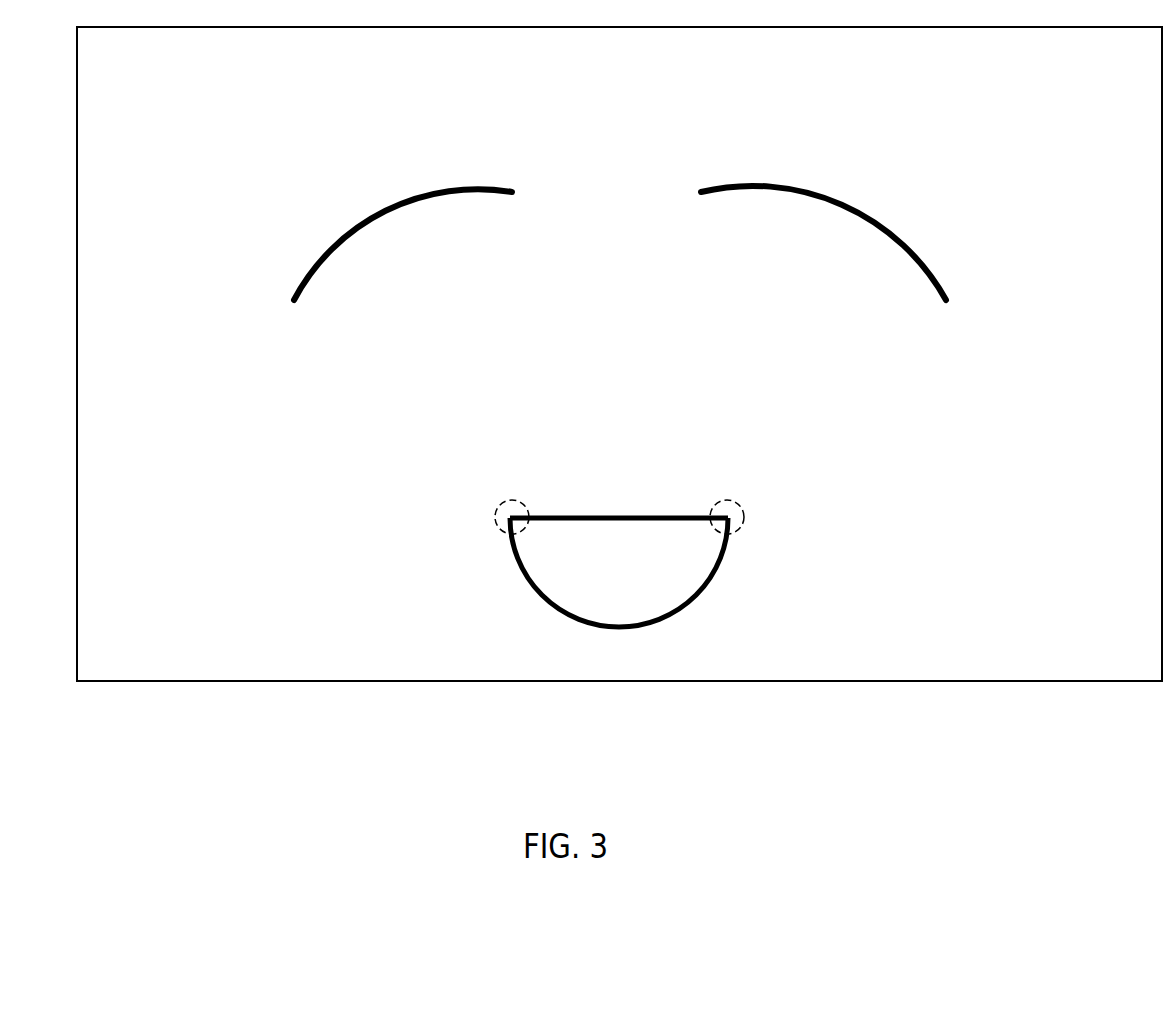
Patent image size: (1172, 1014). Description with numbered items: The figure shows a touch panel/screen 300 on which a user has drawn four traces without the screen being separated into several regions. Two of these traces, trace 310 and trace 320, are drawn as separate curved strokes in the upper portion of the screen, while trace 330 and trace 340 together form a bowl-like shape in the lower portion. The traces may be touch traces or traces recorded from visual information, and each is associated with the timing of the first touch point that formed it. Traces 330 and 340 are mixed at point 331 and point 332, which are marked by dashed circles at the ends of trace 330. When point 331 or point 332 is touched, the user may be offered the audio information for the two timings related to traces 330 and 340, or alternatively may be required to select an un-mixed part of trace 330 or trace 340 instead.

The touch panel/screen 300 is at (1000, 709).
The trace 310 is at (381, 211).
The trace 320 is at (856, 211).
The trace 330 is at (620, 516).
The point 331 is at (511, 511).
The point 332 is at (728, 512).
The trace 340 is at (707, 588).